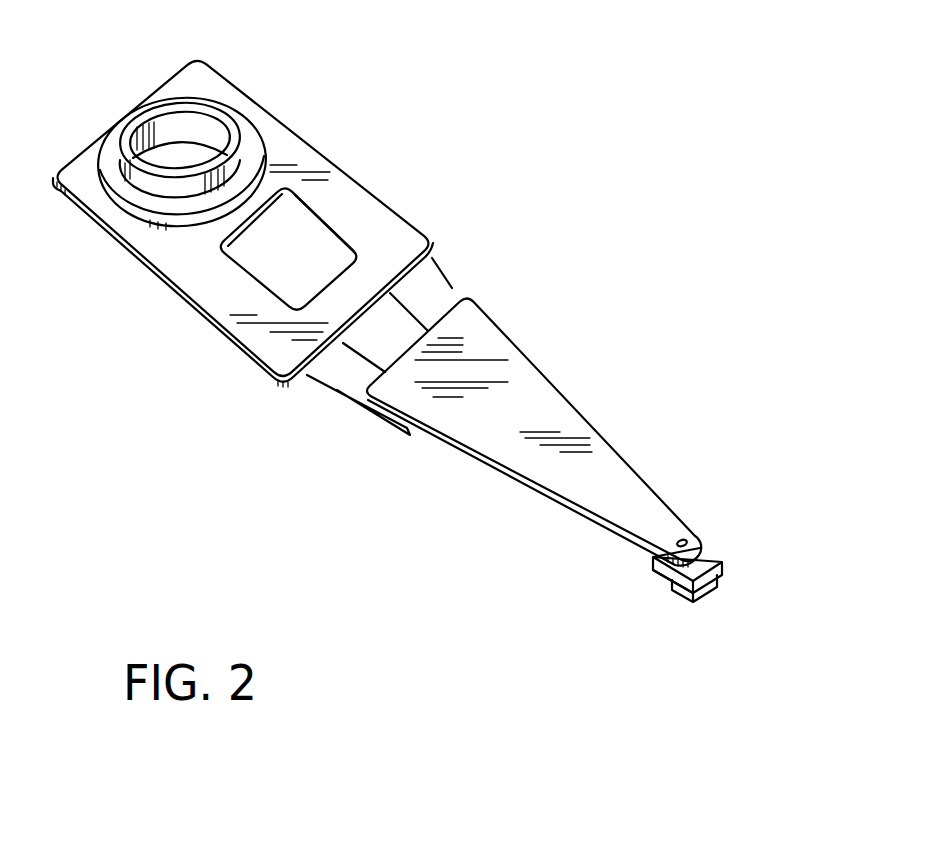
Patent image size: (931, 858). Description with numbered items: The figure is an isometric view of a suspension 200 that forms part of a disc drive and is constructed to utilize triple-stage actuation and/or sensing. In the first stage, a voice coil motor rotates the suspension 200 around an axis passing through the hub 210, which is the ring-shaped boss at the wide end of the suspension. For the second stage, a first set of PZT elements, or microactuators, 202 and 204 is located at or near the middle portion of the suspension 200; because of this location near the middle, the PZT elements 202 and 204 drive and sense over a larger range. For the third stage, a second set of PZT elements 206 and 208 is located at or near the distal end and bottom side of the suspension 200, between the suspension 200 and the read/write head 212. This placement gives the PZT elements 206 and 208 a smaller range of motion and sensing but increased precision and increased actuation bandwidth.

The suspension 200 is at (617, 195).
The first set PZT element 202 is at (445, 298).
The first set PZT element 204 is at (352, 387).
The second set PZT element 206 is at (737, 582).
The second set PZT element 208 is at (690, 620).
The hub 210 is at (197, 132).
The read/write head 212 is at (670, 585).